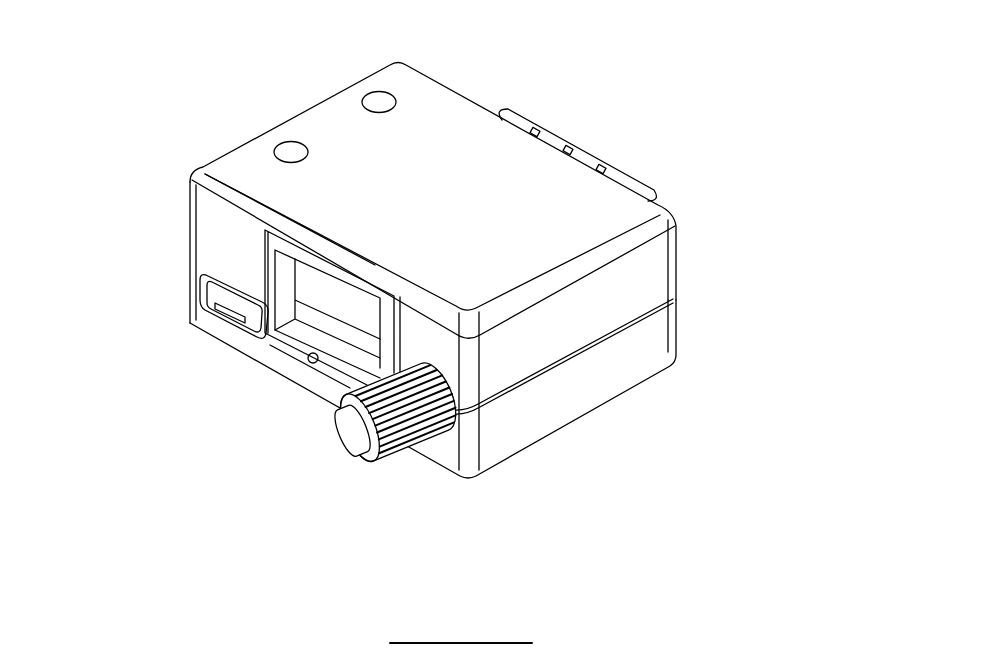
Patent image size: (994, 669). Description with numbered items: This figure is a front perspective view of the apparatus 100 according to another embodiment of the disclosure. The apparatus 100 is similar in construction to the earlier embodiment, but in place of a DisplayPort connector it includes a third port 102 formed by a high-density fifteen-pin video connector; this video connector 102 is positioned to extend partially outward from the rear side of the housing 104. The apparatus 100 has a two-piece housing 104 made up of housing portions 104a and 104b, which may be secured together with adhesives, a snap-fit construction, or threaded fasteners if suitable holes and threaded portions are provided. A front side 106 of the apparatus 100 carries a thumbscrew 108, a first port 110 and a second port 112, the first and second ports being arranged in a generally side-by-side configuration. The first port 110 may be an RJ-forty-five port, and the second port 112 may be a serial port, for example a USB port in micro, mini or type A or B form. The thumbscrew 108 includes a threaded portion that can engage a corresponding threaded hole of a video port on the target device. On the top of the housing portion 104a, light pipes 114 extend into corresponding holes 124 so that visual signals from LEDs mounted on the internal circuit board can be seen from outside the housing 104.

The apparatus 100 is at (187, 129).
The HD-15 connector 102 is at (580, 160).
The housing 104 is at (689, 250).
The housing portion 104a is at (241, 168).
The housing portion 104b is at (623, 370).
The front side 106 is at (208, 236).
The thumbscrew 108 is at (337, 425).
The first port 110 is at (343, 348).
The second port 112 is at (247, 318).
The light pipes 114 is at (282, 147).
The holes 124 is at (270, 158).